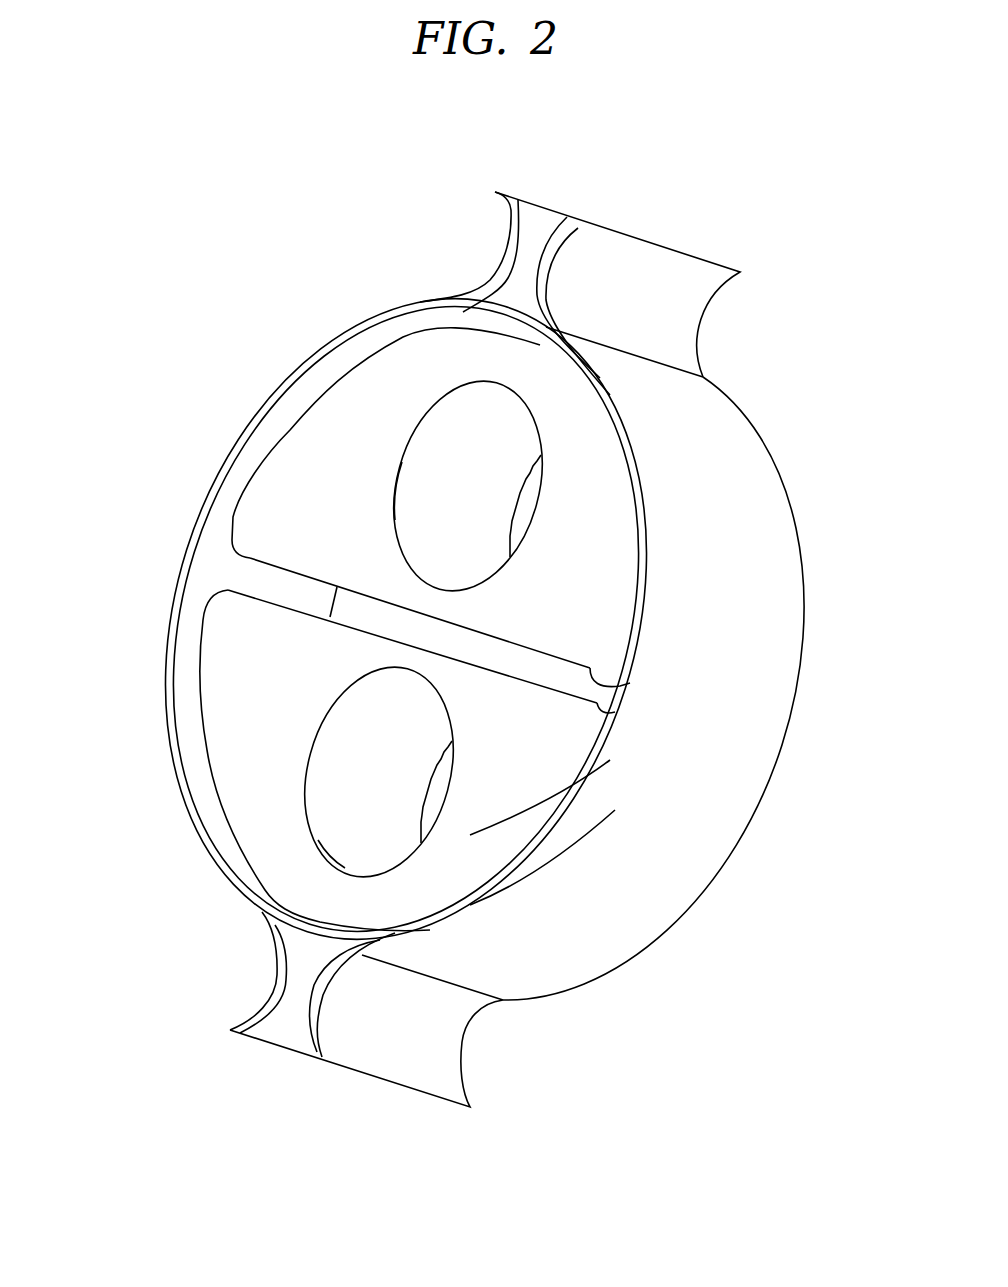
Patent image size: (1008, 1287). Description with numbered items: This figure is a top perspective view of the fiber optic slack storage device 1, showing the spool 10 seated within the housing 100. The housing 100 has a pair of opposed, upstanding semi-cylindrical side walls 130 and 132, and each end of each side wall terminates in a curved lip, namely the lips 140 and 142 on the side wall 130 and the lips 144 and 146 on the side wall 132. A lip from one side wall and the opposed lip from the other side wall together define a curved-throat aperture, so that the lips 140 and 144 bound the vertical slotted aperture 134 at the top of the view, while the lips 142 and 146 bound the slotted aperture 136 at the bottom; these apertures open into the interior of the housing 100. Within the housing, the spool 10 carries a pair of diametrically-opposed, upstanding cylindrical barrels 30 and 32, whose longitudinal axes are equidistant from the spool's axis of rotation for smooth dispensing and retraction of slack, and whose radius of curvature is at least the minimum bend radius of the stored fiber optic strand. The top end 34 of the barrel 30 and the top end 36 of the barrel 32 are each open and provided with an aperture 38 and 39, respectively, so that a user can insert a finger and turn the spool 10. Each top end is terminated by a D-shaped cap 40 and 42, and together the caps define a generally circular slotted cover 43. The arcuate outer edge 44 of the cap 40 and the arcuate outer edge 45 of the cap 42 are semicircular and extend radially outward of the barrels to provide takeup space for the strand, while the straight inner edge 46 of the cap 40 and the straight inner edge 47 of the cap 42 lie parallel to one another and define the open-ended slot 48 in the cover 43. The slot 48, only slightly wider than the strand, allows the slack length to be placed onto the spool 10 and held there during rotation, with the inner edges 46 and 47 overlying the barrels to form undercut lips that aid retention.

The device 1 is at (832, 419).
The spool 10 is at (312, 453).
The cylindrical barrel 30 is at (455, 420).
The cylindrical barrel 32 is at (327, 790).
The top end 34 is at (393, 520).
The top end 36 is at (328, 862).
The aperture 38 is at (460, 460).
The aperture 39 is at (370, 717).
The D-shaped cap 40 is at (593, 530).
The D-shaped cap 42 is at (537, 772).
The slotted cover 43 is at (490, 817).
The arcuate outer edge 44 is at (620, 425).
The arcuate outer edge 45 is at (517, 890).
The inner edge 46 is at (627, 690).
The inner edge 47 is at (597, 697).
The open-ended slot 48 is at (253, 573).
The housing 100 is at (764, 699).
The side wall 130 is at (727, 577).
The side wall 132 is at (170, 615).
The slotted aperture 134 is at (518, 300).
The slotted aperture 136 is at (300, 950).
The curved lip 140 is at (540, 287).
The curved lip 142 is at (410, 1033).
The curved lip 144 is at (502, 255).
The curved lip 146 is at (273, 983).